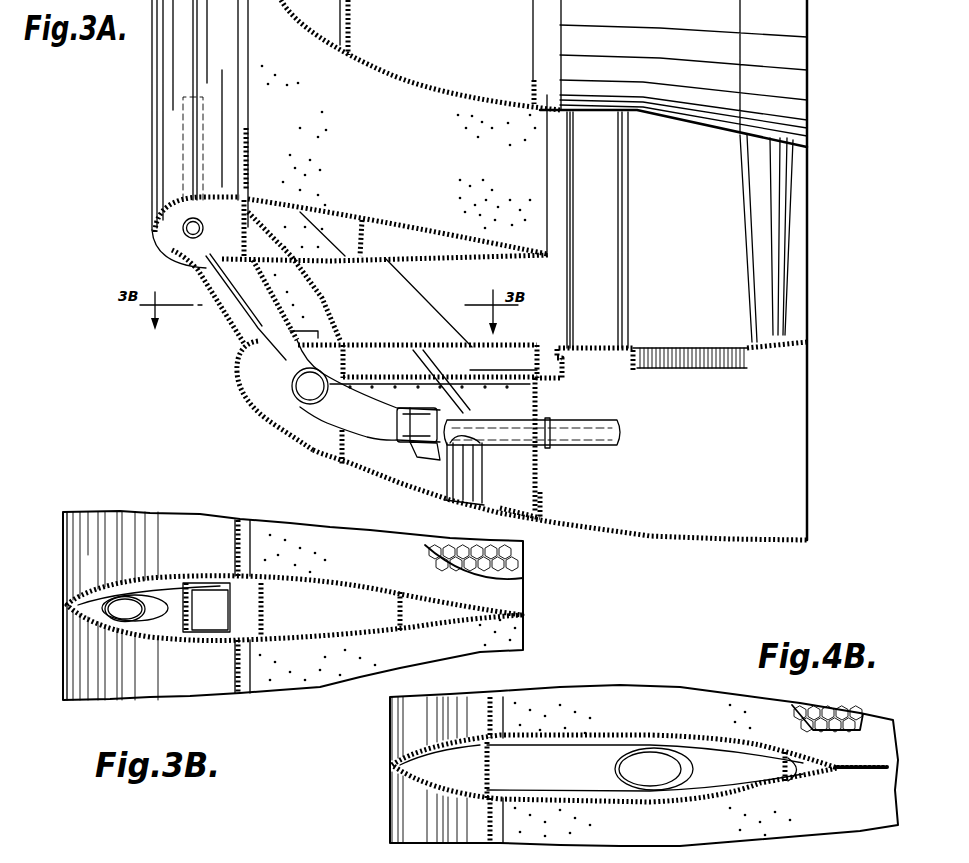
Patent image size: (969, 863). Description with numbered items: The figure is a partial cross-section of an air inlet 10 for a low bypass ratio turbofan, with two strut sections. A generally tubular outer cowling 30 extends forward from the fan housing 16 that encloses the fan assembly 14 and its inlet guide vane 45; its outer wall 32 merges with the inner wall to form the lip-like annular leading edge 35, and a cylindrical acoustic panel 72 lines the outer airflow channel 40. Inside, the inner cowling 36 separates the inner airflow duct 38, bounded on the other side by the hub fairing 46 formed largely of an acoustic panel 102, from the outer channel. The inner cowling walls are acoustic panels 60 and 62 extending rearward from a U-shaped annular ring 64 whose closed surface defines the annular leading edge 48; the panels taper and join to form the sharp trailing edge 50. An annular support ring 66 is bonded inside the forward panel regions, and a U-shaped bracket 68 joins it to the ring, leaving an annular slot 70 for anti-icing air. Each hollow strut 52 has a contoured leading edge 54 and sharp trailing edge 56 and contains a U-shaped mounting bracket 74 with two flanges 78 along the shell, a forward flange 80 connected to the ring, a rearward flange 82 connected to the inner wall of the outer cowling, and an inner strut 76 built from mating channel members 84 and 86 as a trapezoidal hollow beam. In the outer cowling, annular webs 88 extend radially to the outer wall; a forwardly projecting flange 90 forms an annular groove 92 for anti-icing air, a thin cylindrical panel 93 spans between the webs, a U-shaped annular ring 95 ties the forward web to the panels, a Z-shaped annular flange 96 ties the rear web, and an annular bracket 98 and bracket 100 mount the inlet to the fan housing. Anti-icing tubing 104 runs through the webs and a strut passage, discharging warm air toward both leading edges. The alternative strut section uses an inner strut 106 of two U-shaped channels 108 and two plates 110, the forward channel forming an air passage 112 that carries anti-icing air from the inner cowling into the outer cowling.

In FIG. 3A, the air inlet 10 is at (151, 127).
In FIG. 3B, the air inlet 10 is at (121, 860).
In FIG. 3A, the fan assembly 14 is at (761, 198).
In FIG. 4B, the fan assembly 14 is at (752, 856).
In FIG. 3A, the fan housing 16 is at (700, 541).
In FIG. 3A, the outer cowling 30 is at (321, 452).
In FIG. 3A, the outer wall 32 is at (371, 470).
In FIG. 3A, the annular leading edge 35 is at (238, 378).
In FIG. 4B, the annular leading edge 35 is at (391, 722).
In FIG. 3A, the inner cowling 36 is at (381, 216).
In FIG. 3A, the inner airflow duct 38 is at (363, 115).
In FIG. 3A, the outer airflow channel 40 is at (531, 323).
In FIG. 3A, the inlet guide vane 45 is at (606, 247).
In FIG. 3A, the engine hub fairing 46 is at (309, 35).
In FIG. 3A, the annular leading edge 48 is at (157, 232).
In FIG. 3A, the trailing edge 50 is at (548, 204).
In FIG. 3A, the strut 52 is at (233, 330).
In FIG. 3B, the strut 52 is at (133, 641).
In FIG. 4B, the strut 52 is at (423, 793).
In FIG. 3B, the leading edge 54 is at (66, 606).
In FIG. 4B, the leading edge 54 is at (391, 763).
In FIG. 3A, the trailing edge 56 is at (404, 308).
In FIG. 3B, the trailing edge 56 is at (521, 617).
In FIG. 4B, the trailing edge 56 is at (872, 773).
In FIG. 3A, the acoustic panel 60 is at (262, 184).
In FIG. 3A, the acoustic panel 62 is at (340, 263).
In FIG. 3A, the annular ring 64 is at (194, 196).
In FIG. 3B, the annular ring 64 is at (147, 528).
In FIG. 3A, the annular support ring 66 is at (353, 210).
In FIG. 3A, the U-shaped bracket 68 is at (240, 233).
In FIG. 3A, the annular slot 70 is at (248, 152).
In FIG. 3B, the annular slot 70 is at (228, 862).
In FIG. 3A, the acoustic panel 72 is at (394, 344).
In FIG. 3A, the mounting bracket 74 is at (234, 327).
In FIG. 3B, the mounting bracket 74 is at (213, 567).
In FIG. 3A, the inner strut 76 is at (404, 310).
In FIG. 3B, the inner strut 76 is at (415, 628).
In FIG. 3B, the flange 78 is at (231, 572).
In FIG. 3A, the flange 80 is at (192, 268).
In FIG. 3A, the duct housing 82 is at (324, 341).
In FIG. 3B, the duct housing 82 is at (221, 604).
In FIG. 3B, the channel member 84 is at (333, 586).
In FIG. 3B, the channel member 86 is at (287, 633).
In FIG. 3A, the annular web 88 is at (291, 441).
In FIG. 3A, the flange 90 is at (320, 352).
In FIG. 3A, the annular groove 92 is at (302, 330).
In FIG. 3B, the annular groove 92 is at (247, 680).
In FIG. 3A, the cylindrical panel 93 is at (501, 381).
In FIG. 3A, the annular ring 95 is at (354, 361).
In FIG. 3A, the annular flange 96 is at (522, 368).
In FIG. 3A, the annular bracket 98 is at (563, 374).
In FIG. 3A, the bracket 100 is at (546, 508).
In FIG. 3A, the acoustic panel 102 is at (445, 104).
In FIG. 3A, the anti-icing tubing 104 is at (358, 446).
In FIG. 3B, the anti-icing tubing 104 is at (143, 603).
In FIG. 4B, the anti-icing tubing 104 is at (674, 755).
In FIG. 4B, the inner strut 106 is at (603, 802).
In FIG. 4B, the U-shaped channel 108 is at (488, 767).
In FIG. 4B, the plate 110 is at (584, 790).
In FIG. 4B, the air passage 112 is at (441, 760).